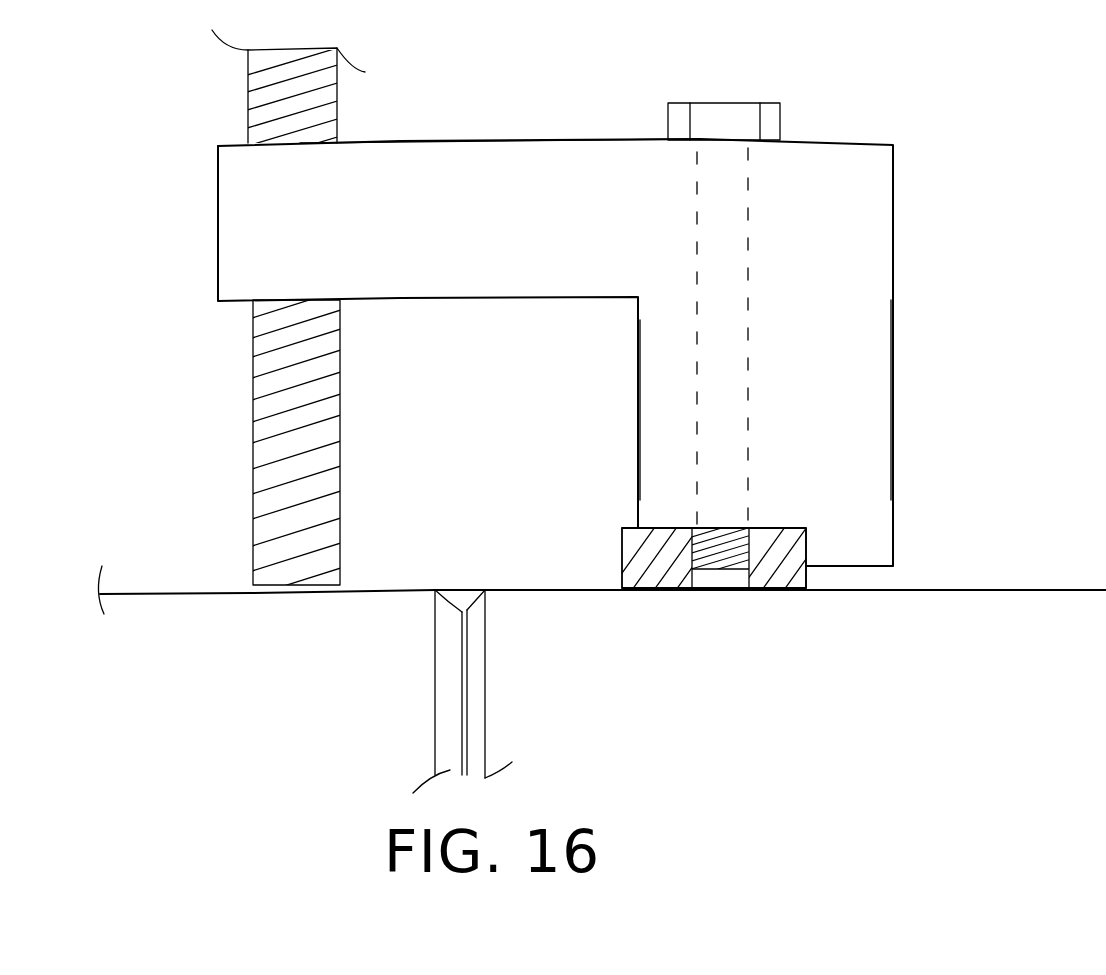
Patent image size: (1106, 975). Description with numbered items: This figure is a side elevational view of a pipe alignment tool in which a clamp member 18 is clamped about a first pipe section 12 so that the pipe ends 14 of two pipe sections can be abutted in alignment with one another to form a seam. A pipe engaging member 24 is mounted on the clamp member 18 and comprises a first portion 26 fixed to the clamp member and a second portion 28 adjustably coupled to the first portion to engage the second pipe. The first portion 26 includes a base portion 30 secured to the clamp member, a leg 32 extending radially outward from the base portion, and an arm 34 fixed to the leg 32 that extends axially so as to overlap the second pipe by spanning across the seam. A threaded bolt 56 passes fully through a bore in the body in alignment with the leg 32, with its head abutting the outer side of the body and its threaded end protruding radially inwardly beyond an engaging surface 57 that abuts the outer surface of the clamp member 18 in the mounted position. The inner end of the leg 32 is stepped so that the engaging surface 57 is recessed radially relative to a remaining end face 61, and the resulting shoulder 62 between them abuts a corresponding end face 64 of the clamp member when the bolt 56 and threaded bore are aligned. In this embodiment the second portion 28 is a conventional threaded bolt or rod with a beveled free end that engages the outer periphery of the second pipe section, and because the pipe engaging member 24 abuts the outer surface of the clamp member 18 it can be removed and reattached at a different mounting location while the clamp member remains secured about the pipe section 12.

The pipe section 12 is at (158, 585).
The pipe end 14 is at (435, 658).
The clamp member 18 is at (594, 560).
The pipe engaging member 24 is at (975, 297).
The first portion 26 is at (610, 329).
The second portion 28 is at (253, 385).
The base portion 30 is at (786, 513).
The leg 32 is at (865, 366).
The arm 34 is at (530, 158).
The threaded bolt 56 is at (742, 100).
The engaging surface 57 is at (672, 528).
The remaining end face 61 is at (868, 566).
The shoulder 62 is at (806, 548).
The end face of the clamp member 64 is at (806, 576).